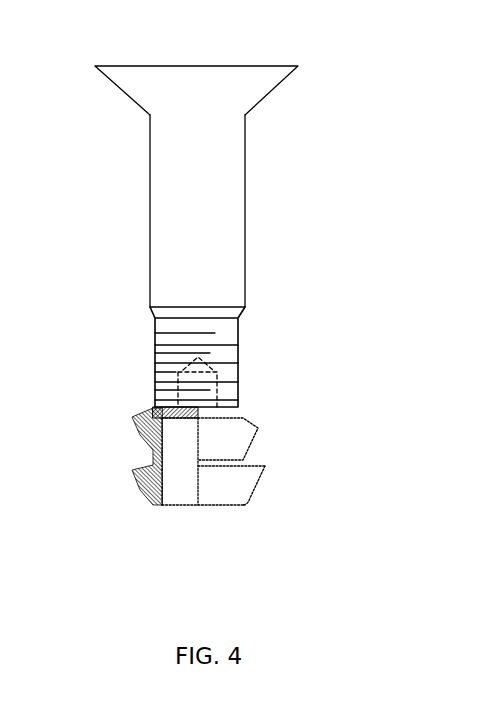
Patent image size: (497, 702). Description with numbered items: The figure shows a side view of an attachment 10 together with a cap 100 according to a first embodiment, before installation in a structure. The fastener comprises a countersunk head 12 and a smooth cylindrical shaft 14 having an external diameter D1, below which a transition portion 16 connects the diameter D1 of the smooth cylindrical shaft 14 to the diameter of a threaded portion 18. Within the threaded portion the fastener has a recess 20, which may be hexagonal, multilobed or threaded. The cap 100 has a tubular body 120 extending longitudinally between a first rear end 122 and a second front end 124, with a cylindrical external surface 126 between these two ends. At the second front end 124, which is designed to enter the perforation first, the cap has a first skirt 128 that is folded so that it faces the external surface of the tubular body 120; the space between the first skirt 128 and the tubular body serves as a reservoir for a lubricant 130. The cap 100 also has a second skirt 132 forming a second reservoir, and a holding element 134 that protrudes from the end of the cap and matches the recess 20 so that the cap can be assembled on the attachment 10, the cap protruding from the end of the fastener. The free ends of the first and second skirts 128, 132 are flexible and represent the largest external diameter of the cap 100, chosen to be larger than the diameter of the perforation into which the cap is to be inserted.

The attachment 10 is at (302, 127).
The countersunk head 12 is at (188, 65).
The smooth cylindrical shaft 14 is at (149, 161).
The external diameter D1 is at (112, 194).
The transition portion 16 is at (201, 319).
The threaded portion 18 is at (153, 347).
The recess 20 is at (215, 372).
The first rear end 122 is at (172, 407).
The holding element 134 is at (208, 390).
The cap 100 is at (380, 434).
The tubular body 120 is at (272, 462).
The second front end 124 is at (222, 506).
The cylindrical external surface 126 is at (180, 475).
The first skirt 128 is at (252, 493).
The lubricant 130 is at (145, 467).
The second skirt 132 is at (258, 428).